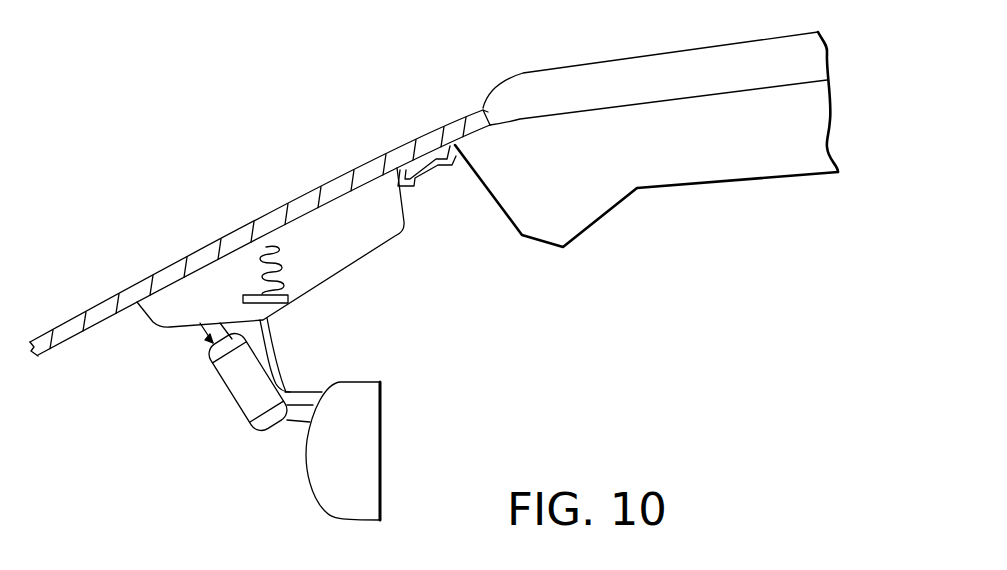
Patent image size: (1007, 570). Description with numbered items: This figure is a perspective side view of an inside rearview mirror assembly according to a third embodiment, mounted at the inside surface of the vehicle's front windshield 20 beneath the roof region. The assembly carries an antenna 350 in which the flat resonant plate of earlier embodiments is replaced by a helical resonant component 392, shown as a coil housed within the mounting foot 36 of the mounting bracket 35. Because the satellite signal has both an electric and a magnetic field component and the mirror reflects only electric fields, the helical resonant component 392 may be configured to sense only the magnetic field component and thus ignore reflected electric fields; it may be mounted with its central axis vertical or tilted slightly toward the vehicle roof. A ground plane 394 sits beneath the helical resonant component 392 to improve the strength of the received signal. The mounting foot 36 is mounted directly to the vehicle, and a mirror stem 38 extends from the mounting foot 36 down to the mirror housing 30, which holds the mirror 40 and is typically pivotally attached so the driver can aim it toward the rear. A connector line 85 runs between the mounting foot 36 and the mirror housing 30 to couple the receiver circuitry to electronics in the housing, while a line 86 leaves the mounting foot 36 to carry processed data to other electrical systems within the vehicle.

The front windshield 20 is at (157, 278).
The antenna 350 is at (226, 214).
The mounting foot 36 is at (352, 263).
The line 86 is at (412, 186).
The helical resonant component 392 is at (266, 255).
The ground plane 394 is at (283, 292).
The mirror stem 38 is at (232, 377).
The mounting bracket 35 is at (247, 436).
The connector line 85 is at (307, 392).
The mirror 40 is at (363, 464).
The mirror housing 30 is at (323, 492).